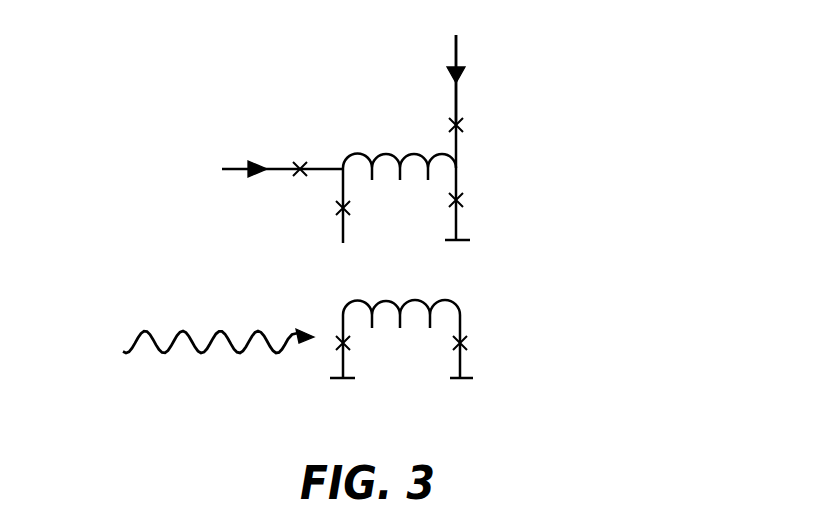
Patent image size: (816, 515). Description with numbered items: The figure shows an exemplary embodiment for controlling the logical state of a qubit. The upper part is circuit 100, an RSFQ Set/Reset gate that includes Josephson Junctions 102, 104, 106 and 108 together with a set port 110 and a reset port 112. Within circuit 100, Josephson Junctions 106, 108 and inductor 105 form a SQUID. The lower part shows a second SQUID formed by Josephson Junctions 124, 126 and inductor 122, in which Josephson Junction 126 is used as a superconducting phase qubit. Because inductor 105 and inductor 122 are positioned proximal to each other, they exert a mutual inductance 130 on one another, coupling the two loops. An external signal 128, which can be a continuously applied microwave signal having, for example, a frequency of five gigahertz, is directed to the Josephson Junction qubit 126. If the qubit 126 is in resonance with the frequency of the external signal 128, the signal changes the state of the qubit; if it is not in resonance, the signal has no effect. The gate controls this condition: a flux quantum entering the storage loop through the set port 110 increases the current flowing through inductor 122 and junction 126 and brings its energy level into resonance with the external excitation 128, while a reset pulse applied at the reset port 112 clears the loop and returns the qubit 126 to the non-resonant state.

The circuit 100 is at (512, 177).
The Josephson Junction 102 is at (465, 123).
The Josephson Junction 104 is at (303, 178).
The inductor 105 is at (378, 148).
The Josephson Junction 106 is at (335, 208).
The Josephson Junction 108 is at (467, 197).
The set port 110 is at (259, 168).
The reset port 112 is at (450, 63).
The inductor 122 is at (400, 328).
The Josephson Junction 124 is at (468, 345).
The Josephson Junction qubit 126 is at (337, 343).
The external signal 128 is at (190, 361).
The mutual inductance 130 is at (460, 262).